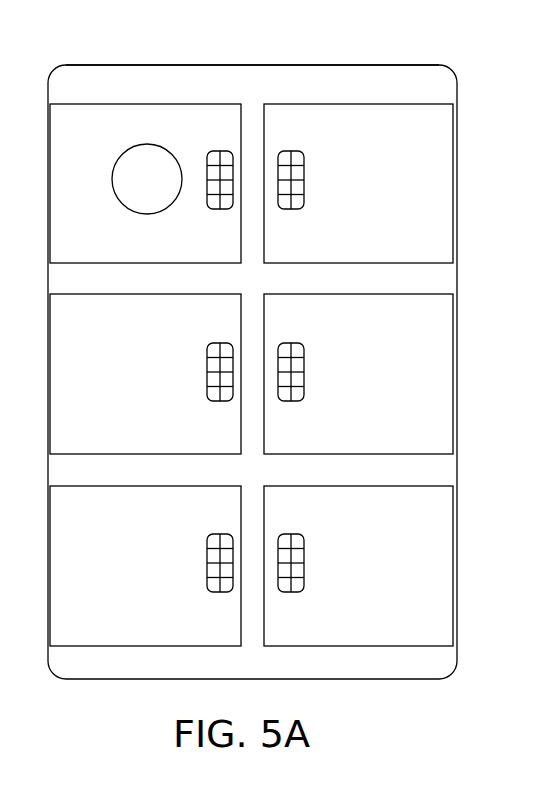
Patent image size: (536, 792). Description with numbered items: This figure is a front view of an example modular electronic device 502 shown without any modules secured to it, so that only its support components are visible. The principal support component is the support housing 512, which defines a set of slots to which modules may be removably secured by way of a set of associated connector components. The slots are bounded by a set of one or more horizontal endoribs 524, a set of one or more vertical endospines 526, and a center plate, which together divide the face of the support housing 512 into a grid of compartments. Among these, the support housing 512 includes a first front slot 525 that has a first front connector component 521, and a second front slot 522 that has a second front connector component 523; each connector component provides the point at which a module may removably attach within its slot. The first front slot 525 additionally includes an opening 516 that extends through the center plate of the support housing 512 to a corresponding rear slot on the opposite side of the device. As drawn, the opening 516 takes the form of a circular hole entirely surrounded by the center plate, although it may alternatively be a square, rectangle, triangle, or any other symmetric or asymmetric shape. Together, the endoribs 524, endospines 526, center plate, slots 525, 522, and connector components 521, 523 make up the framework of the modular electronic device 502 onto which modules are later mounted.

The modular electronic device 502 is at (144, 52).
The support housing 512 is at (265, 90).
The endoribs 524 is at (319, 80).
The opening 516 is at (136, 157).
The first front connector component 521 is at (214, 150).
The second front connector component 523 is at (290, 150).
The first front slot 525 is at (96, 244).
The second front slot 522 is at (390, 242).
The endospines 526 is at (253, 332).